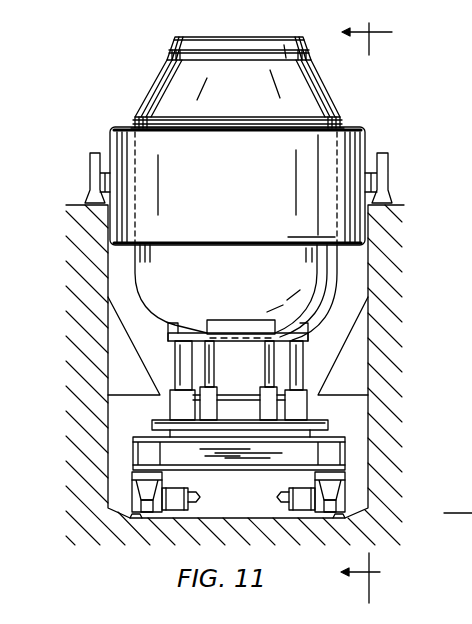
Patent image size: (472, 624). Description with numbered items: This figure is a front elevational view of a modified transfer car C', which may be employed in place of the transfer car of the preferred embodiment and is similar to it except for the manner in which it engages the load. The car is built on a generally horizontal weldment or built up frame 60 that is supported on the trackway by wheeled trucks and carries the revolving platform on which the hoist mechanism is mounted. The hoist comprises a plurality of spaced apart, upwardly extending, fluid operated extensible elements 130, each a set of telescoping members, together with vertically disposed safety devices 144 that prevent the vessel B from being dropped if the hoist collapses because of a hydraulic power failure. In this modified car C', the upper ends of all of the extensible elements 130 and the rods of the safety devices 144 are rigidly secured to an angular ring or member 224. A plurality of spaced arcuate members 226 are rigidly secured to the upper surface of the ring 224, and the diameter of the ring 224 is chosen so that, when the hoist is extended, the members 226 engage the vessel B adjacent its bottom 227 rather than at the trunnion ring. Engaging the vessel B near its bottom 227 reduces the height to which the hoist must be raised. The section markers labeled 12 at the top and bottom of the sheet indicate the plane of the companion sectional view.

The vessel B is at (348, 114).
The arcuate members 226 is at (230, 321).
The angular ring 224 is at (310, 338).
The bottom 227 is at (218, 341).
The extensible elements 130 is at (309, 380).
The safety devices 144 is at (309, 374).
The modified transfer car C' is at (284, 453).
The frame 60 is at (462, 468).
The section line 12 is at (383, 308).